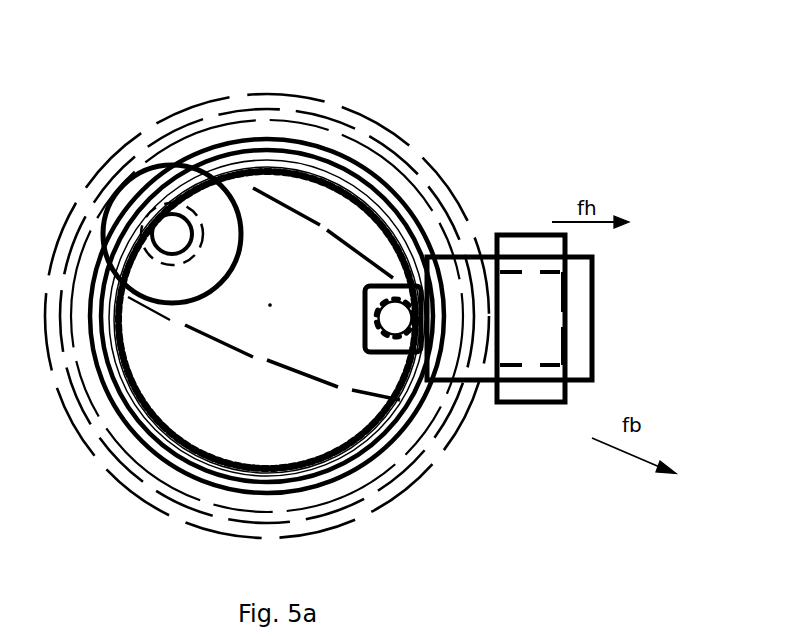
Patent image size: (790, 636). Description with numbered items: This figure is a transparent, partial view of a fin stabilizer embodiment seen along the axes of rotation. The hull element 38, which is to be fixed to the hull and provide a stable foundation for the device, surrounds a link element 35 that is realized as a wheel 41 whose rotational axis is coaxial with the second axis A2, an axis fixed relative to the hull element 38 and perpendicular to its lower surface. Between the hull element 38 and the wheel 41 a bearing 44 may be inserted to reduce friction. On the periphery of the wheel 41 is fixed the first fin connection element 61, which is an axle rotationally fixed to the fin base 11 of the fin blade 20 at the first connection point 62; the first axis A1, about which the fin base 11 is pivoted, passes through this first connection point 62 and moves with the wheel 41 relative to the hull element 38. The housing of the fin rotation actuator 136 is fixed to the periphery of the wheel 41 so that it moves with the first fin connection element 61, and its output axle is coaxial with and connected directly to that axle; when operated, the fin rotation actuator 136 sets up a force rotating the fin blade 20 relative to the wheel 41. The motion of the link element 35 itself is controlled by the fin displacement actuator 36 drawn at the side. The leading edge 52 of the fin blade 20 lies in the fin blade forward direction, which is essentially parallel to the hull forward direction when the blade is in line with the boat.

The fin rotation actuator 136 is at (130, 203).
The first axis A1 is at (238, 151).
The first fin connection element 61 is at (238, 151).
The first connection point 62 is at (170, 232).
The second axis A2 is at (270, 305).
The hull element 38 is at (418, 145).
The bearing 44 is at (408, 197).
The fin base 11 is at (315, 316).
The fin blade 20 is at (327, 273).
The fin displacement actuator 36 is at (597, 310).
The link element 35 is at (293, 361).
The wheel 41 is at (387, 445).
The leading edge 52 is at (478, 403).